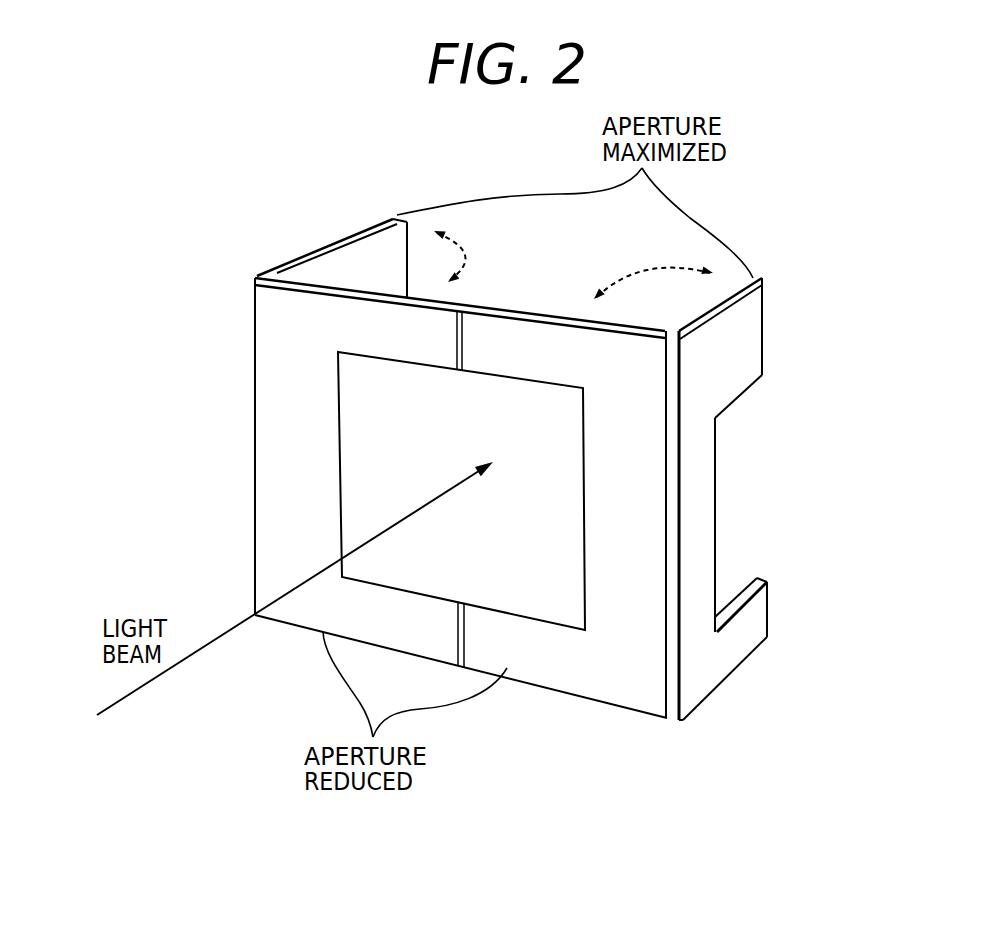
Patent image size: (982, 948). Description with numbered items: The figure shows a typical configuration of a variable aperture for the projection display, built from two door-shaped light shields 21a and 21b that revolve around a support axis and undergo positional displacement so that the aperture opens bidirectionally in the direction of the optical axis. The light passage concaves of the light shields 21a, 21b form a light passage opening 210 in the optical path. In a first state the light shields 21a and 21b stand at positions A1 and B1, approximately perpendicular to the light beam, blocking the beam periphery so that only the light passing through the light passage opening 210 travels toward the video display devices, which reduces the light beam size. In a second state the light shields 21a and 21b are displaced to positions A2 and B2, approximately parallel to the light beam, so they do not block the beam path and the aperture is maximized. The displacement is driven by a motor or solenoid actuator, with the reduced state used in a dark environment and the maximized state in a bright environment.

The light passage opening 210 is at (747, 475).
The light shield 21a is at (747, 350).
The light shield 21b is at (338, 243).
The position of light shield 21a while the light beam size is reduced A1 is at (650, 537).
The position of light shield 21a while the aperture is maximized A2 is at (762, 310).
The position of light shield 21b while the light beam size is reduced B1 is at (300, 443).
The position of light shield 21b while the aperture is maximized B2 is at (371, 235).